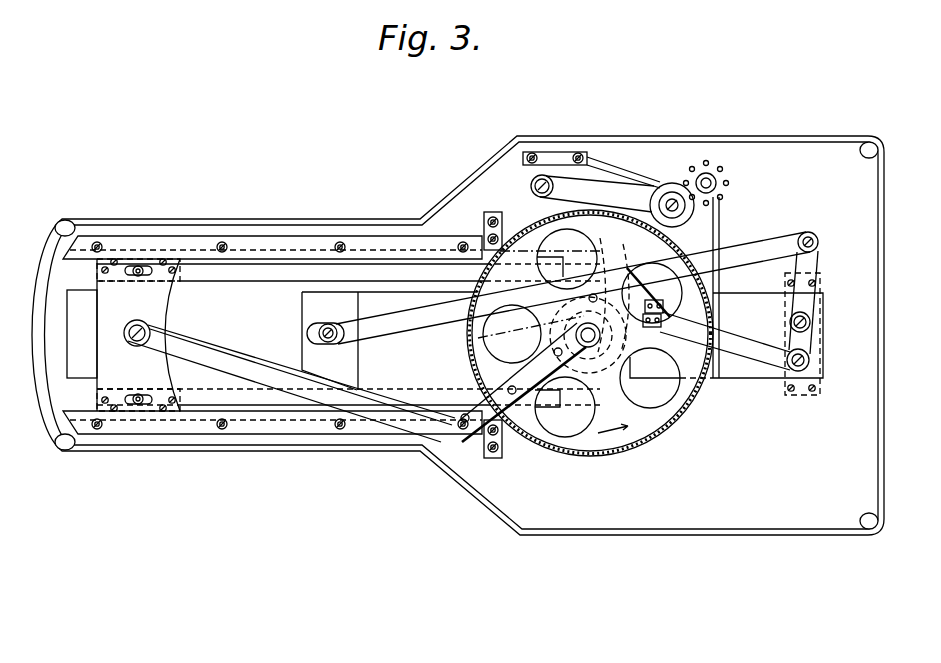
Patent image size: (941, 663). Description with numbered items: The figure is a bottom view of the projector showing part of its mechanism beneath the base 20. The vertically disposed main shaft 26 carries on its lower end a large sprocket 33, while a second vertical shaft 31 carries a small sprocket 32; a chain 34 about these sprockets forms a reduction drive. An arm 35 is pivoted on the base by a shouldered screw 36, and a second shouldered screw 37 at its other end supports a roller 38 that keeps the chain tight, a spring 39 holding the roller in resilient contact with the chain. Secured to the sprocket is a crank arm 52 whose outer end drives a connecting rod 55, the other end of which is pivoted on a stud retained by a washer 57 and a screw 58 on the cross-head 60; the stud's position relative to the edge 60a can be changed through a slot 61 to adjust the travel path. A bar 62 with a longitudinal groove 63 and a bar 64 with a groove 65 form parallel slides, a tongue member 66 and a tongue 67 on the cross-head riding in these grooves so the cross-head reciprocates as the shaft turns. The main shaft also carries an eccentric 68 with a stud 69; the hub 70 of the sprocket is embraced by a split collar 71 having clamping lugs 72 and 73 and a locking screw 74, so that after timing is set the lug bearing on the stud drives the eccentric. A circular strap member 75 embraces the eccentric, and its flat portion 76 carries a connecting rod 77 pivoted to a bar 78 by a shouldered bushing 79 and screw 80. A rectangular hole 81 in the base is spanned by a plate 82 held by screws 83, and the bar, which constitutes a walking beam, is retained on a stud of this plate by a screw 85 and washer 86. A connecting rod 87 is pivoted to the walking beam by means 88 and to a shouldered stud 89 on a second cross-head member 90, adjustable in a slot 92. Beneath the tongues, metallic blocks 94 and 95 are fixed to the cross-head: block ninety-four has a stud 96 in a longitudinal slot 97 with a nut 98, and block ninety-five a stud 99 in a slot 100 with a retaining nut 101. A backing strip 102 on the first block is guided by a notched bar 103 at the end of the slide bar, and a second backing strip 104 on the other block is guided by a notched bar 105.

The base 20 is at (880, 305).
The main shaft 26 is at (565, 407).
The second vertical shaft 31 is at (700, 177).
The small sprocket 32 is at (718, 184).
The large sprocket 33 is at (665, 251).
The chain 34 is at (721, 210).
The arm 35 is at (597, 194).
The shouldered screw 36 is at (531, 186).
The second shouldered screw 37 is at (658, 197).
The roller 38 is at (670, 195).
The spring 39 is at (589, 166).
The crank arm 52 is at (523, 382).
The connecting rod 55 is at (218, 352).
The washer 57 is at (158, 330).
The screw 58 is at (165, 340).
The cross-head 60 is at (110, 349).
The edge of the cross-head 60a is at (97, 282).
The slot 61 is at (127, 332).
The bar 62 is at (207, 422).
The longitudinal groove 63 is at (250, 418).
The bar 64 is at (245, 245).
The groove 65 is at (283, 252).
The tongue member 66 is at (153, 412).
The tongue 67 is at (180, 262).
The eccentric 68 is at (579, 270).
The stud 69 is at (604, 286).
The hub 70 is at (531, 334).
The split collar 71 is at (591, 348).
The clamping lug 72 is at (626, 289).
The clamping lug 73 is at (628, 300).
The locking screw 74 is at (652, 293).
The circular strap member 75 is at (568, 266).
The flat portion 76 is at (665, 316).
The connecting rod 77 is at (725, 341).
The bar 78 is at (814, 276).
The shouldered bushing 79 is at (792, 353).
The screw 80 is at (810, 360).
The rectangular hole 81 is at (741, 376).
The plate 82 is at (820, 346).
The screws 83 is at (786, 283).
The screw 85 is at (810, 322).
The washer 86 is at (806, 313).
The connecting rod 87 is at (573, 288).
The connecting means 88 is at (816, 241).
The shouldered stud 89 is at (309, 338).
The second cross-head member 90 is at (358, 358).
The slot 92 is at (320, 330).
The metallic block 94 is at (128, 403).
The metallic block 95 is at (127, 265).
The stud 96 is at (141, 396).
The longitudinal slot 97 is at (130, 399).
The nut 98 is at (136, 397).
The stud 99 is at (141, 268).
The slot 100 is at (142, 279).
The retaining nut 101 is at (140, 268).
The backing strip 102 is at (348, 398).
The notched bar 103 is at (486, 446).
The second backing strip 104 is at (348, 273).
The notched bar 105 is at (484, 223).